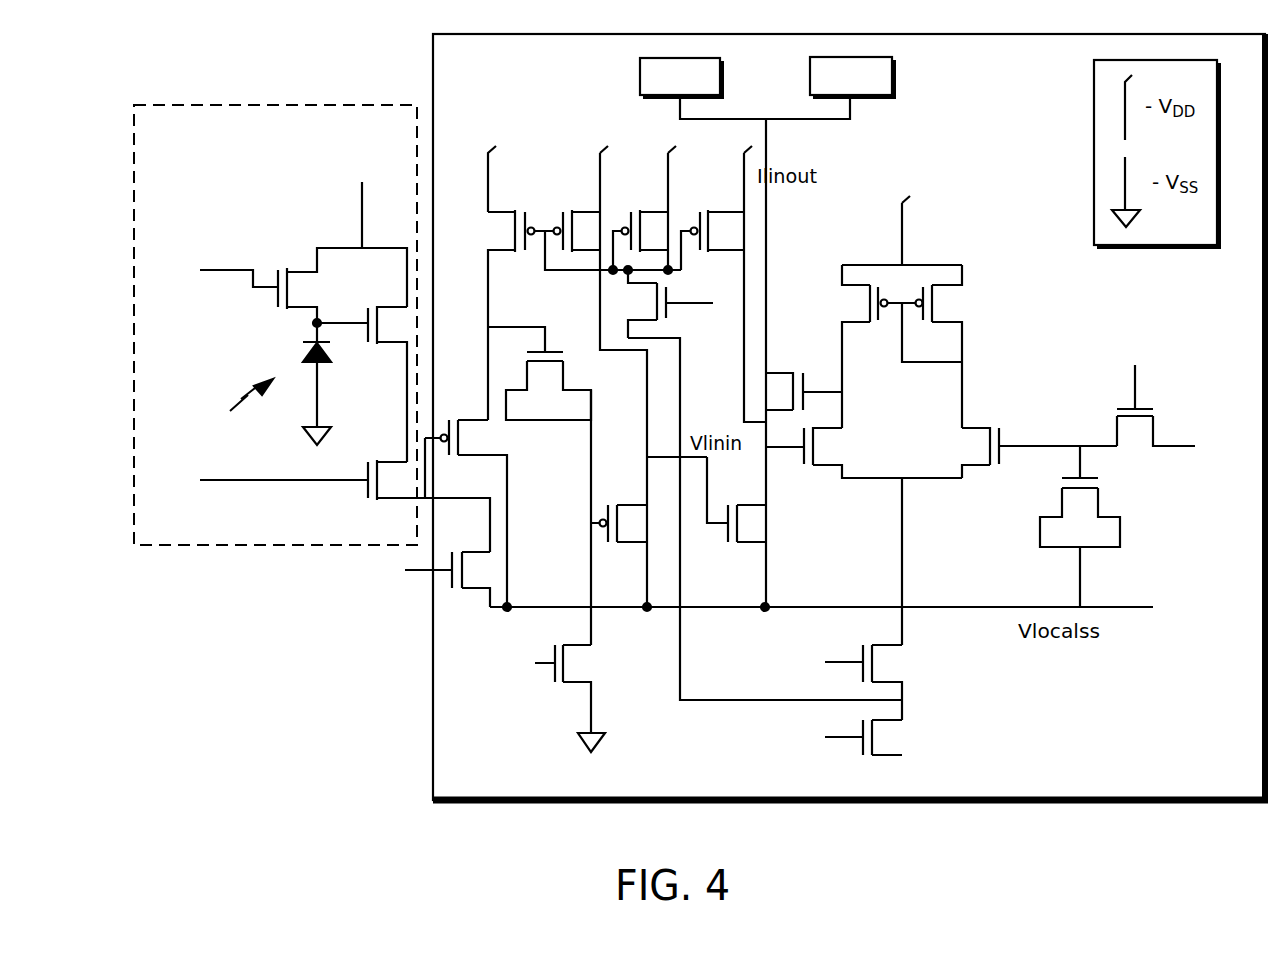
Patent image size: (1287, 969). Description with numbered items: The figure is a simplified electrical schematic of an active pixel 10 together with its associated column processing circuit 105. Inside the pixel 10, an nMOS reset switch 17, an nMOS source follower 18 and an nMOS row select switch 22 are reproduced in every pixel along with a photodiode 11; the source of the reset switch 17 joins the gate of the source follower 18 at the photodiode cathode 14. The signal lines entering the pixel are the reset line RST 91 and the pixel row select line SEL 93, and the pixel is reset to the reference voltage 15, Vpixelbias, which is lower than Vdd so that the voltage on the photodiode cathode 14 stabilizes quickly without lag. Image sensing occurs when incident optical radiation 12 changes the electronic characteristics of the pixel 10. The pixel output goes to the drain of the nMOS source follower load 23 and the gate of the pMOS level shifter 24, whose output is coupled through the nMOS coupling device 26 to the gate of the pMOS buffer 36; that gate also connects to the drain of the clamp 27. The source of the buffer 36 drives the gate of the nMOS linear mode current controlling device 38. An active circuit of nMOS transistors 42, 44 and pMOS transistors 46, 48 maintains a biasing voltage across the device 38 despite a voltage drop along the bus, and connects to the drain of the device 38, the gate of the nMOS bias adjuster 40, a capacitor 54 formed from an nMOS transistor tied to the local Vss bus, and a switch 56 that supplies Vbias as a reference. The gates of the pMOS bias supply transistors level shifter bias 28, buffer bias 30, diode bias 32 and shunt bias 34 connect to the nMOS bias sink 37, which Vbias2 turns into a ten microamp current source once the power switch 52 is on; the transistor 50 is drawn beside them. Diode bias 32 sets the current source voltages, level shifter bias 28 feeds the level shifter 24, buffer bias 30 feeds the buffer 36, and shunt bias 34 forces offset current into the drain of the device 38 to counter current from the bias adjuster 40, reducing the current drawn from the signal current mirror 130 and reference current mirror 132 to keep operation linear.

The active pixel 10 is at (168, 141).
The photodiode 11 is at (312, 343).
The incident optical radiation 12 is at (241, 395).
The photodiode cathode 14 is at (328, 322).
The reference voltage 15 is at (371, 174).
The reset switch 17 is at (303, 268).
The source follower 18 is at (393, 350).
The row select switch 22 is at (363, 492).
The source follower load 23 is at (482, 552).
The level shifter 24 is at (477, 418).
The coupling device 26 is at (543, 340).
The clamp 27 is at (570, 683).
The level shifter bias 28 is at (504, 213).
The buffer bias 30 is at (588, 207).
The diode bias 32 is at (656, 207).
The shunt bias 34 is at (723, 207).
The buffer 36 is at (634, 542).
The bias sink 37 is at (655, 297).
The linear mode current controlling device 38 is at (750, 542).
The bias adjuster 40 is at (775, 372).
The nMOS transistor of active circuit 42 is at (824, 465).
The nMOS transistor of active circuit 44 is at (975, 465).
The pMOS transistor of active circuit 46 is at (851, 287).
The pMOS transistor of active circuit 48 is at (953, 287).
The transistor 50 is at (888, 648).
The power switch 52 is at (888, 723).
The capacitor 54 is at (1082, 463).
The switch 56 is at (1136, 388).
The reset line RST 91 is at (184, 310).
The pixel row select line SEL 93 is at (184, 519).
The column processing circuit 105 is at (476, 782).
The signal current mirror 130 is at (697, 86).
The reference current mirror 132 is at (867, 87).